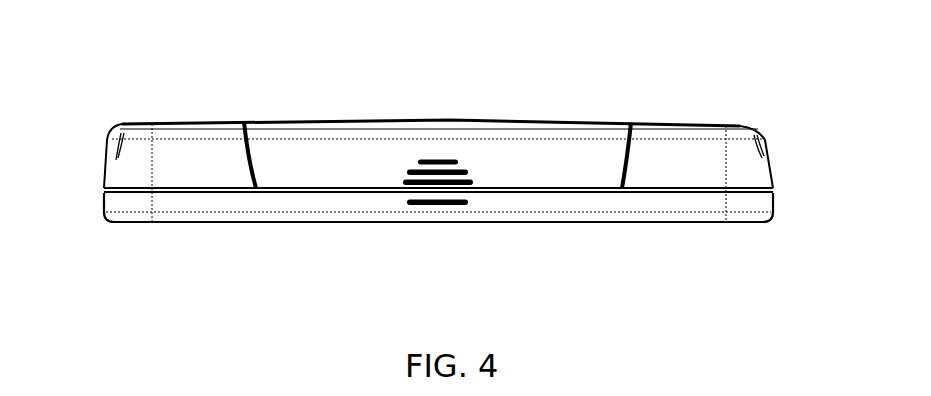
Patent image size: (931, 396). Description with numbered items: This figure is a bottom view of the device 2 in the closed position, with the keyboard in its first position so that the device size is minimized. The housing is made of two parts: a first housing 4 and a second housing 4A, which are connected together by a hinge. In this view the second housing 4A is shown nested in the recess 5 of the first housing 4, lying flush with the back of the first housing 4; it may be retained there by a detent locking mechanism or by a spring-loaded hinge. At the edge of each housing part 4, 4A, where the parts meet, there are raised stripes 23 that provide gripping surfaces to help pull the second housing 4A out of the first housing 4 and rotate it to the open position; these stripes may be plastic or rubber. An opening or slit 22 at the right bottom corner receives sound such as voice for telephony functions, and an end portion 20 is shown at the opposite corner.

The device 2 is at (53, 84).
The first housing 4 is at (775, 172).
The second housing 4A is at (548, 139).
The recess 5 is at (621, 122).
The left end portion 20 is at (112, 143).
The opening or slit 22 is at (768, 152).
The raised stripes 23 is at (398, 170).